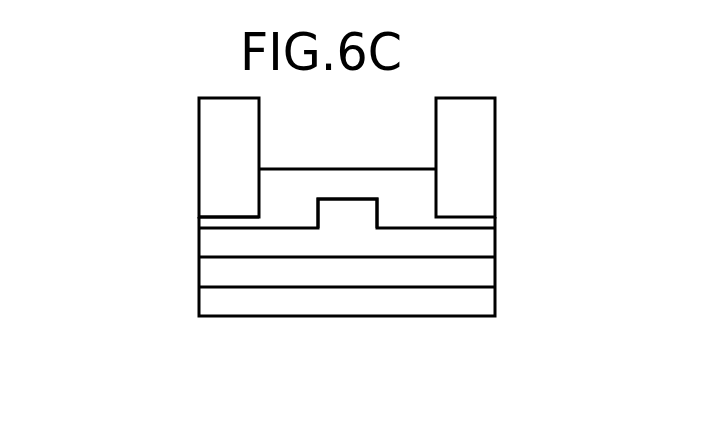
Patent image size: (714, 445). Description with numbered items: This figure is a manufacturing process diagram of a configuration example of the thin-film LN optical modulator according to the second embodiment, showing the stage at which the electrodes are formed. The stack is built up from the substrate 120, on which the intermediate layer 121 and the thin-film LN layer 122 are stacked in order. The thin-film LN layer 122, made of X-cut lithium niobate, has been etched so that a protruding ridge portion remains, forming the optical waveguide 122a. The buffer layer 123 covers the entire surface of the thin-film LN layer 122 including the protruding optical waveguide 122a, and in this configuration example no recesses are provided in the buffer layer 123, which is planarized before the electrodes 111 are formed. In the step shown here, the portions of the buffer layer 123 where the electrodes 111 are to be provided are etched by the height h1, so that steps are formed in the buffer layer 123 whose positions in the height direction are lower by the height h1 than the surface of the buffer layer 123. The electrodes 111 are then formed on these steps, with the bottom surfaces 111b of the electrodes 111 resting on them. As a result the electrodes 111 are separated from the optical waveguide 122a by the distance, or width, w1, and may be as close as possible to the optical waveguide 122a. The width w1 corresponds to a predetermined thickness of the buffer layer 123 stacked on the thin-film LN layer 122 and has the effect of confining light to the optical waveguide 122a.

The electrodes 111 is at (208, 132).
The buffer layer 123 is at (417, 205).
The thin-film LN layer 122 is at (480, 248).
The optical waveguide 122a is at (345, 212).
The intermediate layer 121 is at (480, 281).
The substrate 120 is at (480, 307).
The bottom surfaces of the electrodes 111b is at (146, 255).
The height h1 is at (183, 169).
The width w1 is at (318, 217).